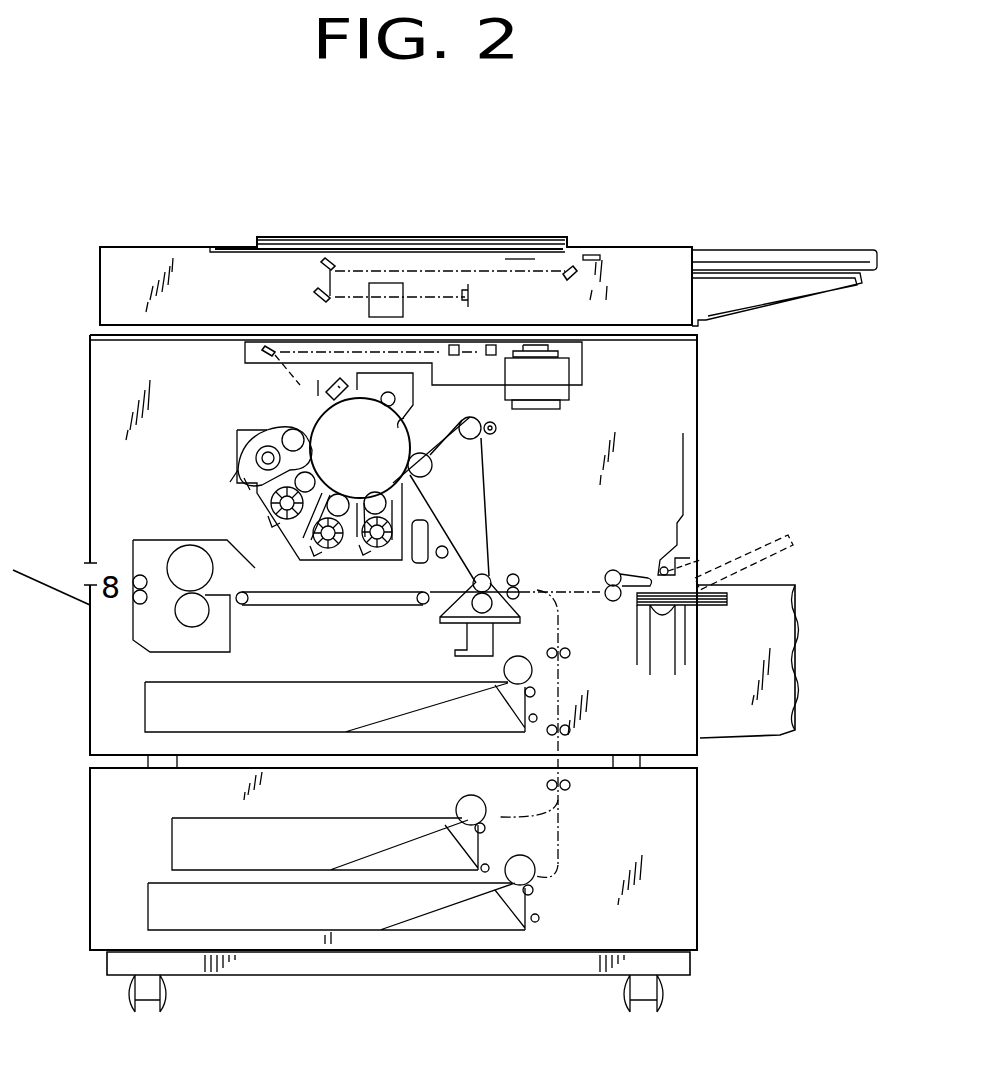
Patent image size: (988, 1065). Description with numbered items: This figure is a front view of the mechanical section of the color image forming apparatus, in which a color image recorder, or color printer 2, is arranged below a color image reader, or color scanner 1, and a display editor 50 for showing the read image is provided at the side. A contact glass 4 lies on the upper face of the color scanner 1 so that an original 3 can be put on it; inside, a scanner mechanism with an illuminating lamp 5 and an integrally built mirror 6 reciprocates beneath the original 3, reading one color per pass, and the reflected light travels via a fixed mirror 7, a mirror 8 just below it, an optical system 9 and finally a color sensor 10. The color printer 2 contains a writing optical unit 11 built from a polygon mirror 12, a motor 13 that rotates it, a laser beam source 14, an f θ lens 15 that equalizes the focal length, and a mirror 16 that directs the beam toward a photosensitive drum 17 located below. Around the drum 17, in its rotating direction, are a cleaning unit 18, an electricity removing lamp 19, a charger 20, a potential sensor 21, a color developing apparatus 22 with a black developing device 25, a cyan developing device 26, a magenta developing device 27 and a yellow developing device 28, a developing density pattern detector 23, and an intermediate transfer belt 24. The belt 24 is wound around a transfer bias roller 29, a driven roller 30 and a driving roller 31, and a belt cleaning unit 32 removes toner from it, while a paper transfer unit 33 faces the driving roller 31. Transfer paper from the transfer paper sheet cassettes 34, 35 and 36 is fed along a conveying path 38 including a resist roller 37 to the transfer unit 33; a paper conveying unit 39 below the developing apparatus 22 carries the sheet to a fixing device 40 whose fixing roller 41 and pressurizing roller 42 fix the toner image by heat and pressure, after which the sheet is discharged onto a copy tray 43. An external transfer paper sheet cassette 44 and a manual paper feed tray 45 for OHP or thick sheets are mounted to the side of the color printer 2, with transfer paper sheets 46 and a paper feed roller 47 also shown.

The color image reader (color scanner) 1 is at (643, 246).
The color image recorder (color printer) 2 is at (90, 410).
The original 3 is at (318, 236).
The contact glass 4 is at (232, 242).
The illuminating lamp 5 is at (557, 248).
The mirror 6 is at (578, 278).
The mirror 7 is at (321, 266).
The mirror 8 is at (316, 298).
The optical system 9 is at (405, 294).
The color sensor 10 is at (463, 300).
The writing optical unit 11 is at (573, 373).
The polygon mirror 12 is at (570, 351).
The motor 13 is at (572, 402).
The laser beam source 14 is at (496, 347).
The f θ lens 15 is at (460, 344).
The mirror 16 is at (247, 355).
The photosensitive drum 17 is at (393, 447).
The cleaning unit 18 is at (432, 370).
The electricity removing lamp 19 is at (352, 396).
The charger 20 is at (318, 395).
The potential sensor 21 is at (287, 430).
The color developing apparatus 22 is at (240, 432).
The developing density pattern detector 23 is at (412, 590).
The intermediate transfer belt 24 is at (487, 455).
The black (BK) developing device 25 is at (245, 445).
The cyan (C) developing device 26 is at (360, 545).
The magenta (M) developing device 27 is at (312, 541).
The yellow (Y) developing device 28 is at (264, 493).
The transfer bias roller 29 is at (420, 478).
The driven roller 30 is at (433, 466).
The driving roller 31 is at (482, 574).
The belt cleaning unit 32 is at (414, 553).
The paper transfer unit 33 is at (490, 637).
The transfer paper sheet cassette 34 is at (335, 682).
The transfer paper sheet cassette 35 is at (497, 428).
The transfer paper sheet cassette 36 is at (160, 883).
The resist roller 37 is at (516, 574).
The conveying path 38 is at (560, 615).
The paper conveying unit 39 is at (345, 607).
The fixing device 40 is at (232, 636).
The fixing roller 41 is at (178, 548).
The pressurizing roller 42 is at (180, 606).
The copy tray 43 is at (50, 600).
The transfer paper sheet cassette 44 is at (745, 742).
The manual paper feed tray 45 is at (752, 545).
The transfer paper sheets 46 is at (657, 585).
The paper feed roller 47 is at (648, 580).
The display editor 50 is at (784, 249).